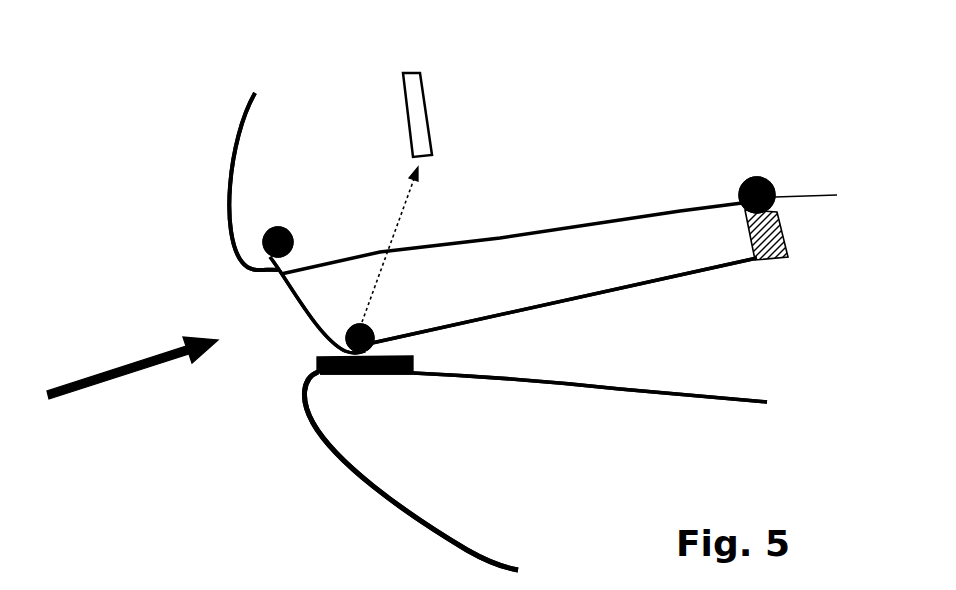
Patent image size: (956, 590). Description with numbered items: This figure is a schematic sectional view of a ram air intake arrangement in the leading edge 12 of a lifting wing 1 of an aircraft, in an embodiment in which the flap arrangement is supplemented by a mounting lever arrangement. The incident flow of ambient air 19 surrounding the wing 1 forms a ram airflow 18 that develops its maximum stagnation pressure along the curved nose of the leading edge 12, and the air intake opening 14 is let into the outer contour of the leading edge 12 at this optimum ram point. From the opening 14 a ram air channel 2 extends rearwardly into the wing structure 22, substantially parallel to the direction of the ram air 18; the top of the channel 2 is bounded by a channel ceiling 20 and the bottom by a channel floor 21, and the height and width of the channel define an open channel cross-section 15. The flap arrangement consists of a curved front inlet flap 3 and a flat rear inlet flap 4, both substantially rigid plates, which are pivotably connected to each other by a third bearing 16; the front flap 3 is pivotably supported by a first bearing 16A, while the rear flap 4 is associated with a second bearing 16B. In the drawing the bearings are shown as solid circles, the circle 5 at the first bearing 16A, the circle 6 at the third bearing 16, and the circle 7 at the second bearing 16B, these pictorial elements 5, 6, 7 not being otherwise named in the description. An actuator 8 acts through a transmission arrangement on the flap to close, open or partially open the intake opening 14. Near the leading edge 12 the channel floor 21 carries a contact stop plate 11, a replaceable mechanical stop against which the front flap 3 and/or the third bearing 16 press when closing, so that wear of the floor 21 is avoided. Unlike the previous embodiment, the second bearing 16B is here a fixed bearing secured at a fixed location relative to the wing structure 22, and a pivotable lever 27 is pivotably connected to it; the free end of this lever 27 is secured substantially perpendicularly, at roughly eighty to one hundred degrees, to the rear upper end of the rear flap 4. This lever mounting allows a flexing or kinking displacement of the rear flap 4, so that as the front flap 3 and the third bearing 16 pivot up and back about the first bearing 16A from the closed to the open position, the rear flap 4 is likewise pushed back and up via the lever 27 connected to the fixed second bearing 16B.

The lifting wing 1 is at (190, 70).
The ram air channel 2 is at (463, 364).
The front inlet flap 3 is at (303, 318).
The rear inlet flap 4 is at (633, 287).
The upper bearing ball 5 is at (292, 233).
The lower bearing ball 6 is at (352, 330).
The end bearing ball 7 is at (740, 190).
The actuator 8 is at (425, 110).
The contact stop plate 11 is at (317, 367).
The leading edge 12 is at (220, 249).
The air intake opening 14 is at (269, 305).
The open channel cross-section 15 is at (659, 327).
The third bearing 16 is at (383, 323).
The first bearing 16A is at (287, 216).
The second bearing 16B is at (752, 156).
The ram airflow 18 is at (125, 377).
The ambient air 19 is at (152, 188).
The channel ceiling 20 is at (489, 220).
The channel floor 21 is at (533, 367).
The wing structure 22 is at (561, 107).
The pivotable lever 27 is at (783, 228).